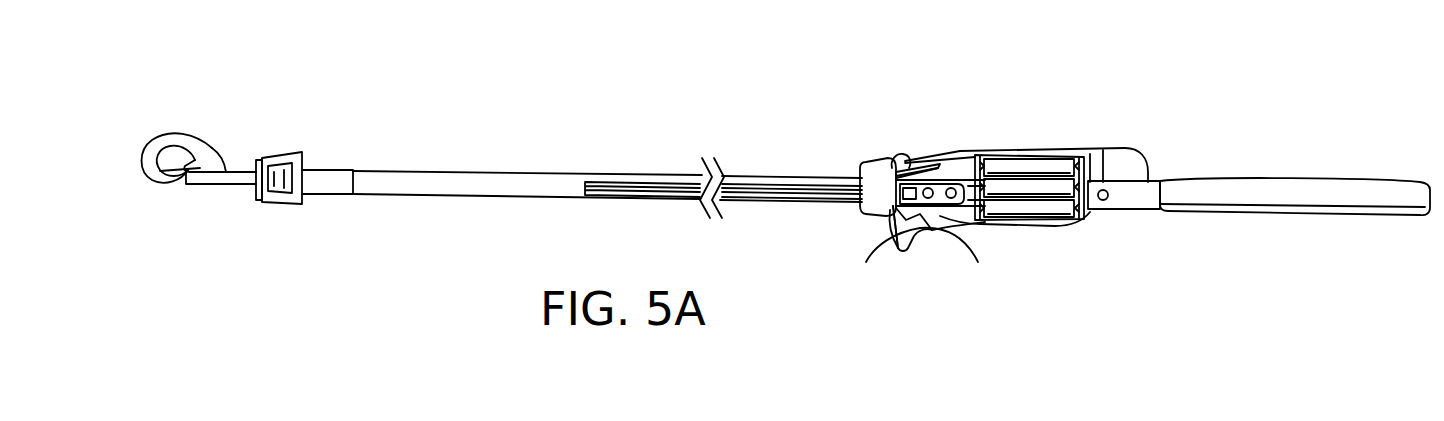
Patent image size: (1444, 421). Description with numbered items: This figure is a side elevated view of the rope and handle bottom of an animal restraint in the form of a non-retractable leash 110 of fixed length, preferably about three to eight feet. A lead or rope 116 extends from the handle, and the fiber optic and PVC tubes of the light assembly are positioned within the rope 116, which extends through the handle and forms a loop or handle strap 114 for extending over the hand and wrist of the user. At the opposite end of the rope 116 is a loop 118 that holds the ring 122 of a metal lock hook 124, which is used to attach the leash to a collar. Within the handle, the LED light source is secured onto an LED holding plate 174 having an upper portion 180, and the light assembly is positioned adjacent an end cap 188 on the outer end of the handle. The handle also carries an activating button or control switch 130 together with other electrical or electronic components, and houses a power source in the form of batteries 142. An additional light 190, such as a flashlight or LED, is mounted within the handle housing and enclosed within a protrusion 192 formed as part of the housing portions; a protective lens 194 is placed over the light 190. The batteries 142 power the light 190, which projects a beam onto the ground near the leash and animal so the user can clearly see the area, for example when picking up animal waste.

The leash 110 is at (958, 150).
The handle strap 114 is at (1232, 195).
The rope 116 is at (366, 171).
The loop 118 is at (333, 194).
The ring 122 is at (270, 205).
The metal lock hook 124 is at (216, 148).
The control switch 130 is at (898, 155).
The batteries 142 is at (1042, 212).
The LED holding plate 174 is at (976, 193).
The upper portion 180 is at (955, 206).
The end cap 188 is at (862, 180).
The light 190 is at (896, 228).
The protrusion 192 is at (922, 238).
The protective lens 194 is at (895, 227).